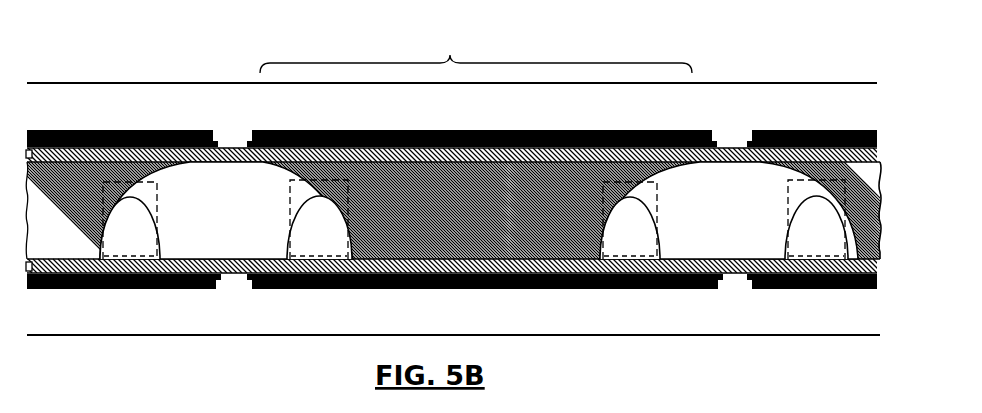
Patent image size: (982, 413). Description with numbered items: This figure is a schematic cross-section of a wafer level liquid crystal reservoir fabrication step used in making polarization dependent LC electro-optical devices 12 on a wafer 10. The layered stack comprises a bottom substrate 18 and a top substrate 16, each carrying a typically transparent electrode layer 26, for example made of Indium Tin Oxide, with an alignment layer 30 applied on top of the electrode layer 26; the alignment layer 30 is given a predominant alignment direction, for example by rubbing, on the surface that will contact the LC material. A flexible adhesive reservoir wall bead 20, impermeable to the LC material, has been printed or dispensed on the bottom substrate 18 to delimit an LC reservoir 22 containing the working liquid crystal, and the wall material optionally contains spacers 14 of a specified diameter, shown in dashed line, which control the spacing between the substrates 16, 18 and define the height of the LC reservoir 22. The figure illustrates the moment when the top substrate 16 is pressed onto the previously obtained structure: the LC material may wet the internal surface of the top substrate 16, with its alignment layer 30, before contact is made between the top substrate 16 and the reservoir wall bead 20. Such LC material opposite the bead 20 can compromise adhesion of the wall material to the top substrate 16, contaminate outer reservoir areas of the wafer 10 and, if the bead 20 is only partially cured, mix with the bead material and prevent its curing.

The wafer 10 is at (769, 362).
The LC electro-optic device 12 is at (476, 51).
The spacers 14 is at (160, 194).
The top substrate 16 is at (452, 101).
The bottom substrate 18 is at (453, 317).
The reservoir wall bead 20 is at (652, 217).
The LC reservoir 22 is at (565, 241).
The electrode layer 26 is at (115, 126).
The alignment layer 30 is at (237, 278).